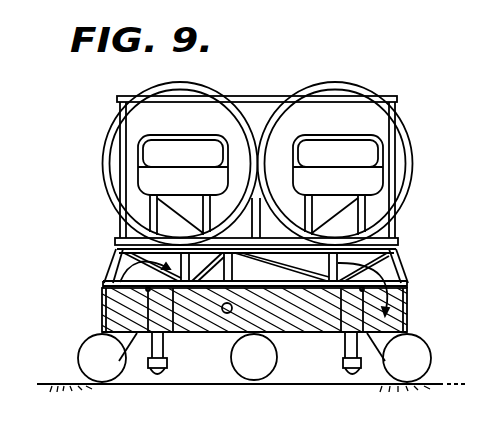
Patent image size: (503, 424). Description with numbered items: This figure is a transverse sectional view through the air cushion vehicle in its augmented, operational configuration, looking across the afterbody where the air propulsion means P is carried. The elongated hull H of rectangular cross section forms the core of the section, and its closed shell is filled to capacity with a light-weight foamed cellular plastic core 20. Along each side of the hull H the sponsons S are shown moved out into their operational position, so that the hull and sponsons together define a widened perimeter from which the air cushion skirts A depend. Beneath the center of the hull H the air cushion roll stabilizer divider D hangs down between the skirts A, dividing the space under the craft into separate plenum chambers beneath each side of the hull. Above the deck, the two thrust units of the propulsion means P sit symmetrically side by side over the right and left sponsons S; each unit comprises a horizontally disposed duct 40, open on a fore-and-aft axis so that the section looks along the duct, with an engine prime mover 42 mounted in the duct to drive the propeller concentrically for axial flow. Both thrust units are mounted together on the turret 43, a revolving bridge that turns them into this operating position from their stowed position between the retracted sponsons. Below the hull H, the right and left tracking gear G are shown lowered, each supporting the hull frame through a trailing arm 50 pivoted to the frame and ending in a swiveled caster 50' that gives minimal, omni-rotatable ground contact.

The air propulsion means P is at (338, 83).
The duct 40 is at (215, 117).
The engine prime mover 42 is at (207, 183).
The turret 43 is at (116, 253).
The foamed cellular plastic core 20 is at (312, 318).
The sponsons S is at (102, 302).
The hull H is at (217, 337).
The air cushion skirts A is at (77, 353).
The air cushion roll stabilizer divider D is at (277, 353).
The trailing arms 50 is at (254, 355).
The casters 50' is at (267, 392).
The tracking gear G is at (152, 375).